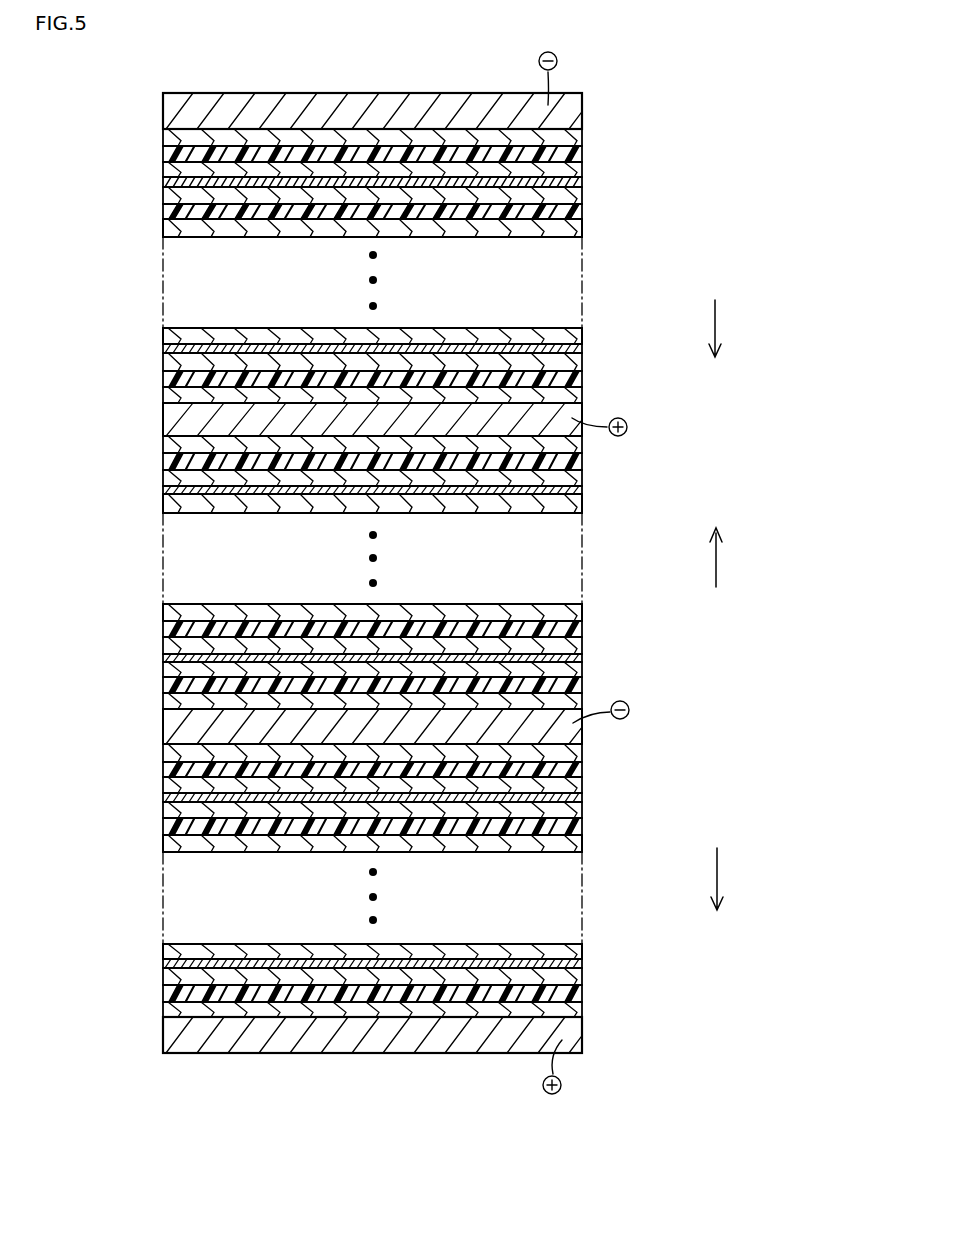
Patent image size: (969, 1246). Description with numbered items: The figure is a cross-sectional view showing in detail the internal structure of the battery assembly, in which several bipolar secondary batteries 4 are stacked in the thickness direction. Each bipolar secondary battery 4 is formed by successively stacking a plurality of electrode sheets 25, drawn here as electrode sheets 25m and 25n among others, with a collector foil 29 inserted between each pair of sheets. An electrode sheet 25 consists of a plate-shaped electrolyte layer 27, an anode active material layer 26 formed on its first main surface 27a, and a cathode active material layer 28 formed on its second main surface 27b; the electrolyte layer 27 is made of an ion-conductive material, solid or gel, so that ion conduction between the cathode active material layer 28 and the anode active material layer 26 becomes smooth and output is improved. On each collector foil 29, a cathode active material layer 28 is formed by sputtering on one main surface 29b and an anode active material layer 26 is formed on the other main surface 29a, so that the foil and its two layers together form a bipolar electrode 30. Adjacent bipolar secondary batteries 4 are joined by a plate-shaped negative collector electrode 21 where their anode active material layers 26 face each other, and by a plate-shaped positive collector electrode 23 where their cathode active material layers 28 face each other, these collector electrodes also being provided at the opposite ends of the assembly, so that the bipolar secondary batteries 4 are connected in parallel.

The bipolar secondary battery 4 is at (160, 130).
The negative collector electrode 21 is at (568, 110).
The positive collector electrode 23 is at (177, 423).
The electrode sheet 25 is at (632, 185).
The electrode sheet 25m is at (632, 118).
The electrode sheet 25n is at (632, 345).
The anode active material layer 26 is at (553, 137).
The electrolyte layer 27 is at (553, 152).
The first main surface 27a is at (497, 203).
The second main surface 27b is at (522, 220).
The cathode active material layer 28 is at (553, 169).
The collector foil 29 is at (180, 182).
The main surface of collector foil 29a is at (185, 210).
The main surface of collector foil 29b is at (185, 161).
The bipolar electrode 30 is at (116, 312).